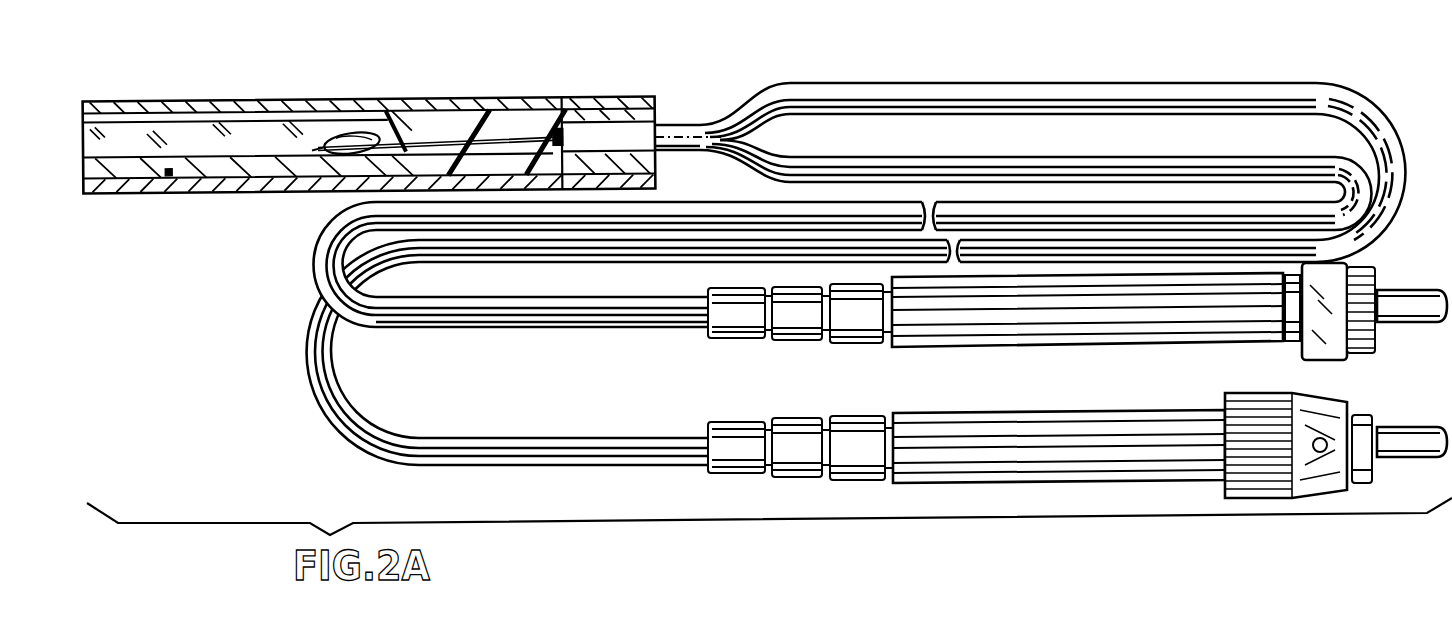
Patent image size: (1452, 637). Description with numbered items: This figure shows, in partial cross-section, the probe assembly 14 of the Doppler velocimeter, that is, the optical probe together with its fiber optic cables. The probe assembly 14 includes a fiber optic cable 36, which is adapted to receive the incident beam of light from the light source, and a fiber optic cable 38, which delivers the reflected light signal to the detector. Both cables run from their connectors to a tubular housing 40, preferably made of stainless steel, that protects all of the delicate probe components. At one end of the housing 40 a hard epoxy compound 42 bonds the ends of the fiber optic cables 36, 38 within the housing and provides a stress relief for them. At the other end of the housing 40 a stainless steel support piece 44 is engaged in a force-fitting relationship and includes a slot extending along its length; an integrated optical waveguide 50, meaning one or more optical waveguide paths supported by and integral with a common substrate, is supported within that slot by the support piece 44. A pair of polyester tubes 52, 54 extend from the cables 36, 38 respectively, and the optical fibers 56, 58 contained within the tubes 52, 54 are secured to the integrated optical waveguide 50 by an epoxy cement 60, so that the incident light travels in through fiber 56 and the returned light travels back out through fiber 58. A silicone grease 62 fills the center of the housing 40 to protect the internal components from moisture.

The probe assembly 14 is at (1408, 114).
The fiber optic cable 36 is at (1022, 413).
The fiber optic cable 38 is at (1148, 345).
The tubular housing 40 is at (176, 100).
The hard epoxy compound 42 is at (658, 159).
The support piece 44 is at (153, 190).
The integrated optical waveguide 50 is at (298, 120).
The polyester tube 52 is at (603, 126).
The polyester tube 54 is at (556, 130).
The optical fiber 56 is at (441, 123).
The optical fiber 58 is at (420, 142).
The epoxy cement 60 is at (327, 133).
The silicone grease 62 is at (300, 172).